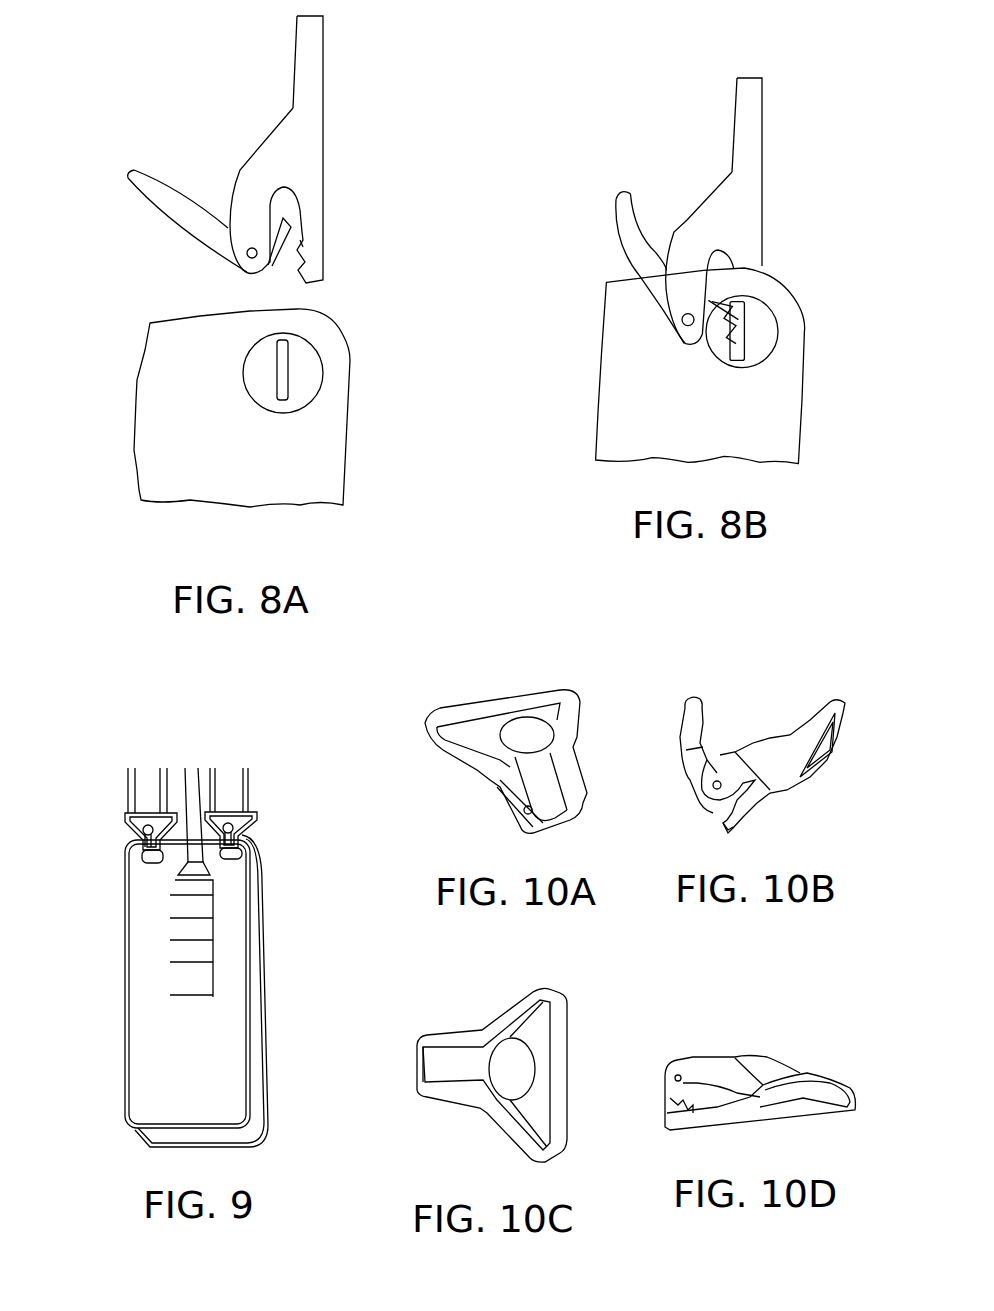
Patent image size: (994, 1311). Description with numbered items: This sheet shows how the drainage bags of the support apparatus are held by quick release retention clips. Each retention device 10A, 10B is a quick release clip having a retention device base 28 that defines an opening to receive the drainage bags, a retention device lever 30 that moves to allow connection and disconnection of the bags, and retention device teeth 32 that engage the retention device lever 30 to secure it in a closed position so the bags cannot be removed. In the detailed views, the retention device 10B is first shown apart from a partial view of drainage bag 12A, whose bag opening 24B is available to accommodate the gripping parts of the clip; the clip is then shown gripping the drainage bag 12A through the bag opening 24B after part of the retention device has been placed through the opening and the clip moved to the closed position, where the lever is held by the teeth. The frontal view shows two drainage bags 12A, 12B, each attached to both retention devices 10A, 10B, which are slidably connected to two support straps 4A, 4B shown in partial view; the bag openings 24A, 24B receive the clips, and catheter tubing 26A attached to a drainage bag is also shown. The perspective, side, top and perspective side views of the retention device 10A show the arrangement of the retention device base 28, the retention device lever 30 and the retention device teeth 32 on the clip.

In FIG. 9, the retention device 10A is at (130, 830).
In FIG. 10A, the retention device 10A is at (474, 812).
In FIG. 10B, the retention device 10A is at (832, 816).
In FIG. 10C, the retention device 10A is at (470, 1150).
In FIG. 10D, the retention device 10A is at (857, 1060).
In FIG. 8A, the retention device 10B is at (336, 118).
In FIG. 8B, the retention device 10B is at (727, 102).
In FIG. 9, the retention device 10B is at (238, 828).
In FIG. 8A, the drainage bag 12A is at (303, 437).
In FIG. 8B, the drainage bag 12A is at (618, 416).
In FIG. 9, the drainage bag 12A is at (158, 1060).
In FIG. 9, the drainage bag 12B is at (262, 1085).
In FIG. 9, the bag opening 24A is at (148, 860).
In FIG. 8A, the bag opening 24B is at (283, 365).
In FIG. 8B, the bag opening 24B is at (740, 350).
In FIG. 9, the bag opening 24B is at (235, 856).
In FIG. 9, the tubing 26A is at (190, 790).
In FIG. 8A, the retention device base 28 is at (240, 178).
In FIG. 8B, the retention device base 28 is at (714, 207).
In FIG. 10A, the retention device base 28 is at (468, 762).
In FIG. 10B, the retention device base 28 is at (765, 750).
In FIG. 10C, the retention device base 28 is at (455, 1033).
In FIG. 10D, the retention device base 28 is at (707, 1060).
In FIG. 8A, the retention device lever 30 is at (175, 220).
In FIG. 8B, the retention device lever 30 is at (622, 192).
In FIG. 10A, the retention device lever 30 is at (525, 730).
In FIG. 10B, the retention device lever 30 is at (698, 720).
In FIG. 10C, the retention device lever 30 is at (507, 1057).
In FIG. 10D, the retention device lever 30 is at (758, 1063).
In FIG. 8A, the retention device teeth 32 is at (300, 247).
In FIG. 8B, the retention device teeth 32 is at (736, 316).
In FIG. 10D, the retention device teeth 32 is at (678, 1075).
In FIG. 9, the support strap 4A is at (145, 779).
In FIG. 9, the support strap 4B is at (230, 777).